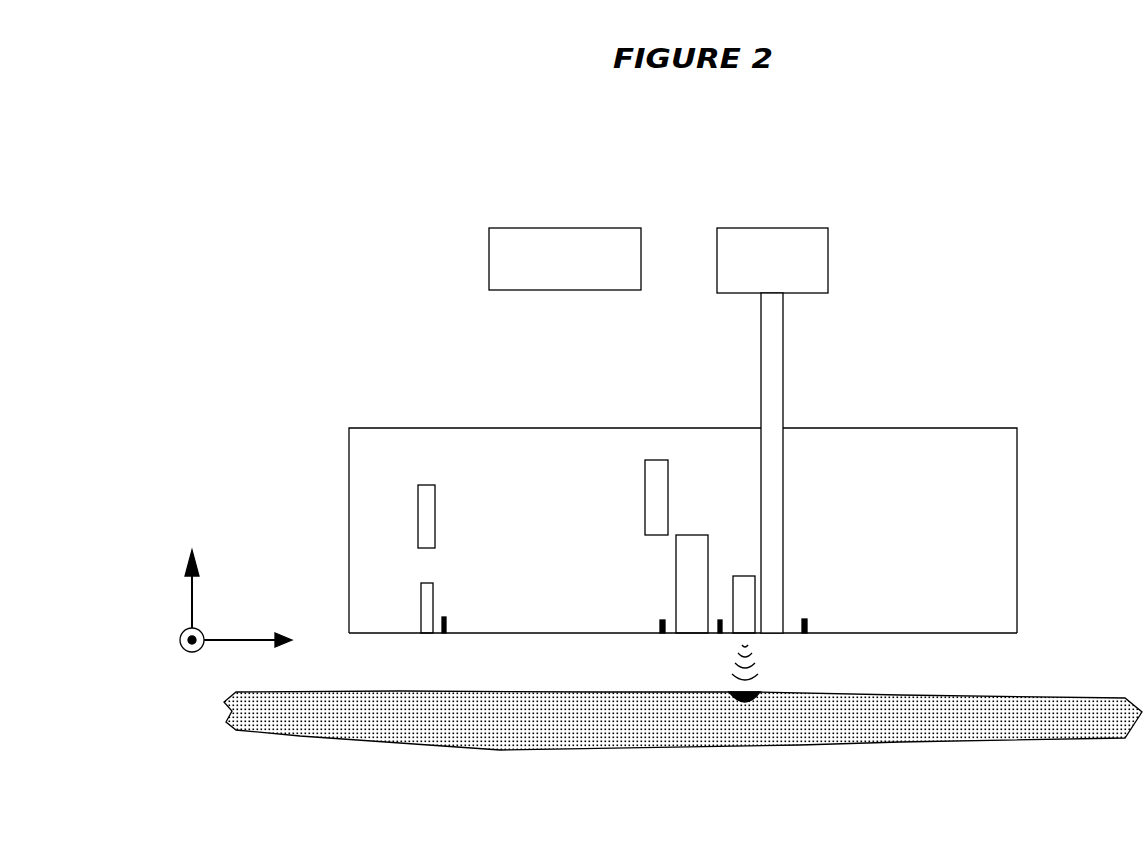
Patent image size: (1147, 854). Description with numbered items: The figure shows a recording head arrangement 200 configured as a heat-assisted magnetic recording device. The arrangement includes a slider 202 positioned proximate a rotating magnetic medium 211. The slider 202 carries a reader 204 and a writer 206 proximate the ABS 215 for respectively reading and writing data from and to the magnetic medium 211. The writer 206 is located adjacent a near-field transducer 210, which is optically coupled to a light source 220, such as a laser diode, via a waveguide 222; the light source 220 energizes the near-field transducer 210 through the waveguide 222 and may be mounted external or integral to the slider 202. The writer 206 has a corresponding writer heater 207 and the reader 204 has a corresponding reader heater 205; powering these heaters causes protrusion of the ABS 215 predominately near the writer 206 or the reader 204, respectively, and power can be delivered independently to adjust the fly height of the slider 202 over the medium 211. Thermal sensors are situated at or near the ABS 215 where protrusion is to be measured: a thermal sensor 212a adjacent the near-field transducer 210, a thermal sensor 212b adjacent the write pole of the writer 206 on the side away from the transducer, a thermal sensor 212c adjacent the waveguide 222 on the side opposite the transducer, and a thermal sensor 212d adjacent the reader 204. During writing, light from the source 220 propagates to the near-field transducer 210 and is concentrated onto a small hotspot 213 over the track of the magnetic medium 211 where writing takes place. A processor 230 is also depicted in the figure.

The recording head arrangement 200 is at (380, 135).
The slider 202 is at (1042, 405).
The reader 204 is at (421, 605).
The reader heater 205 is at (435, 515).
The writer 206 is at (676, 593).
The writer heater 207 is at (645, 505).
The near-field transducer 210 is at (742, 576).
The magnetic medium 211 is at (1080, 696).
The thermal sensor 212a is at (720, 636).
The thermal sensor 212b is at (662, 636).
The thermal sensor 212c is at (806, 636).
The thermal sensor 212d is at (444, 636).
The hotspot 213 is at (745, 701).
The ABS 215 is at (906, 637).
The light source 220 is at (828, 260).
The waveguide 222 is at (783, 366).
The processor 230 is at (488, 258).